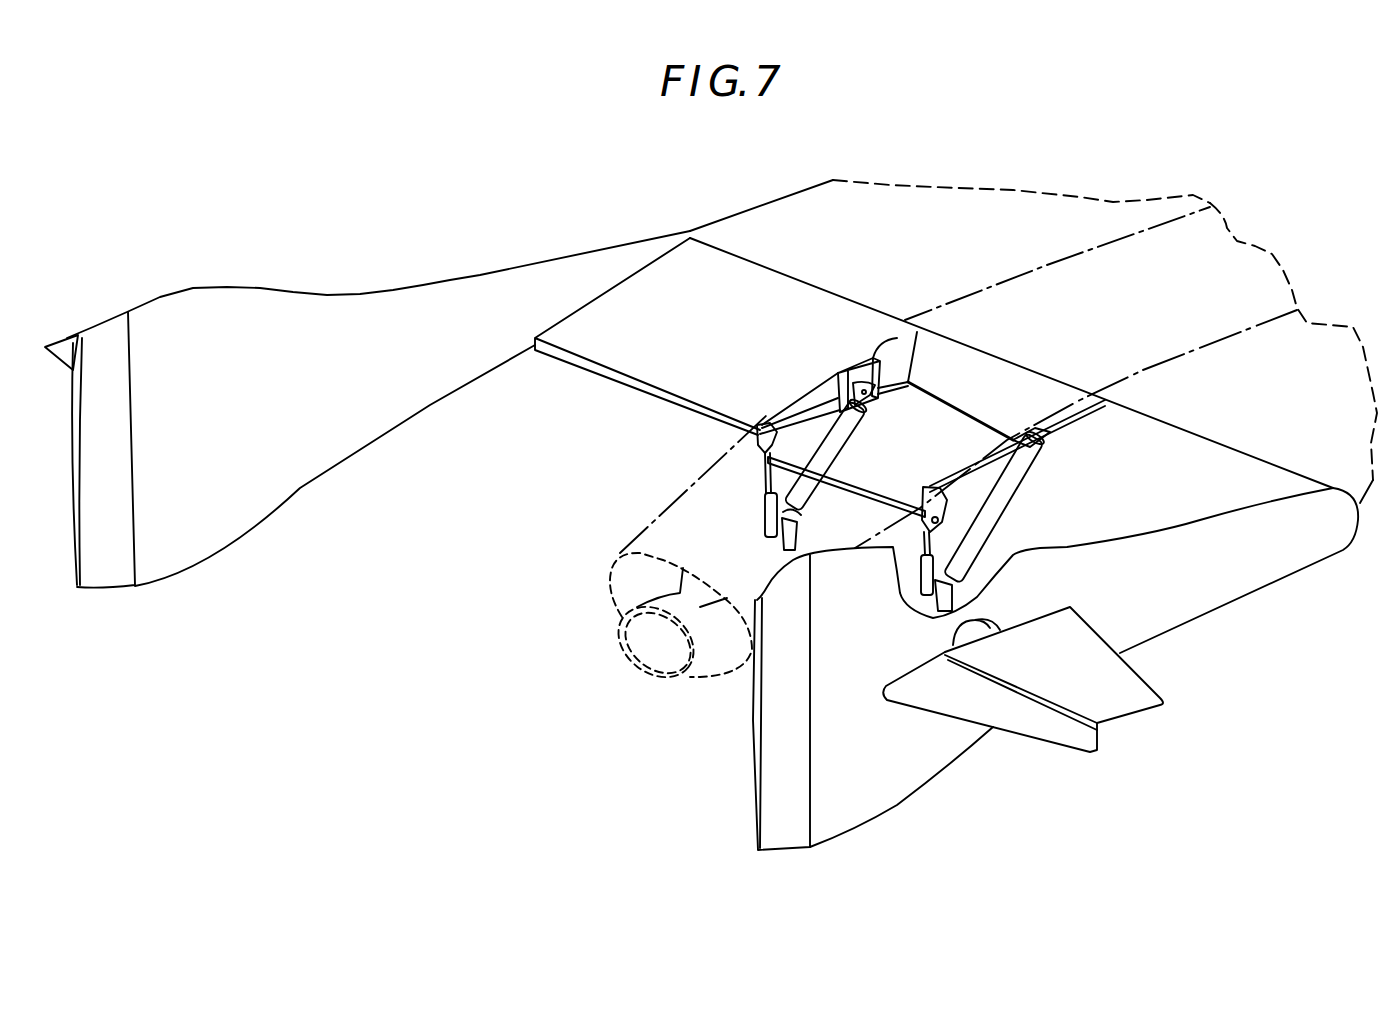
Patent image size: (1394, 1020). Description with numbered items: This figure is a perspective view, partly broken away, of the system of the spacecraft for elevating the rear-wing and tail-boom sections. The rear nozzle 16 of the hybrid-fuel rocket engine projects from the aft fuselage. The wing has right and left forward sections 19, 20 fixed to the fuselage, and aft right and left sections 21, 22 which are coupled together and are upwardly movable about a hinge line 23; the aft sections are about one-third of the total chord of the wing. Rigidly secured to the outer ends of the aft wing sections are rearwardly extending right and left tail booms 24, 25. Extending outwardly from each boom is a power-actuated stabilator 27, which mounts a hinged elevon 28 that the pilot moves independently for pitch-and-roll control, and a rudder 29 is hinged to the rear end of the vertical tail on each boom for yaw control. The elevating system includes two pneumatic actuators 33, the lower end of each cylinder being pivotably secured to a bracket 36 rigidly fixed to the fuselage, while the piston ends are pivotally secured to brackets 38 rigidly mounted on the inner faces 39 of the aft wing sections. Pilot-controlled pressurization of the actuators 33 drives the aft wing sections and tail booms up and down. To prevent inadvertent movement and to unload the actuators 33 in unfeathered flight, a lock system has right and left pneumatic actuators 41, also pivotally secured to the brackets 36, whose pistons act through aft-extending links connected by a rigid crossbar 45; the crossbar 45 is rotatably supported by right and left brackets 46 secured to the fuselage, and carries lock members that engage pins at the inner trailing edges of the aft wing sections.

The rear nozzle 16 is at (618, 633).
The right forward wing section 19 is at (1310, 370).
The left forward wing section 20 is at (953, 223).
The aft right wing section 21 is at (1214, 485).
The aft left wing section 22 is at (745, 335).
The hinge line 23 is at (1177, 423).
The right tail boom 24 is at (1163, 597).
The left tail boom 25 is at (410, 388).
The stabilator 27 is at (1107, 690).
The elevon 28 is at (65, 347).
The rudder 29 is at (110, 498).
The pneumatic actuator 33 is at (868, 438).
The bracket 36 is at (782, 548).
The bracket 38 is at (858, 368).
The inner face 39 is at (900, 352).
The pneumatic actuator 41 is at (745, 507).
The crossbar 45 is at (883, 497).
The bracket 46 is at (972, 500).